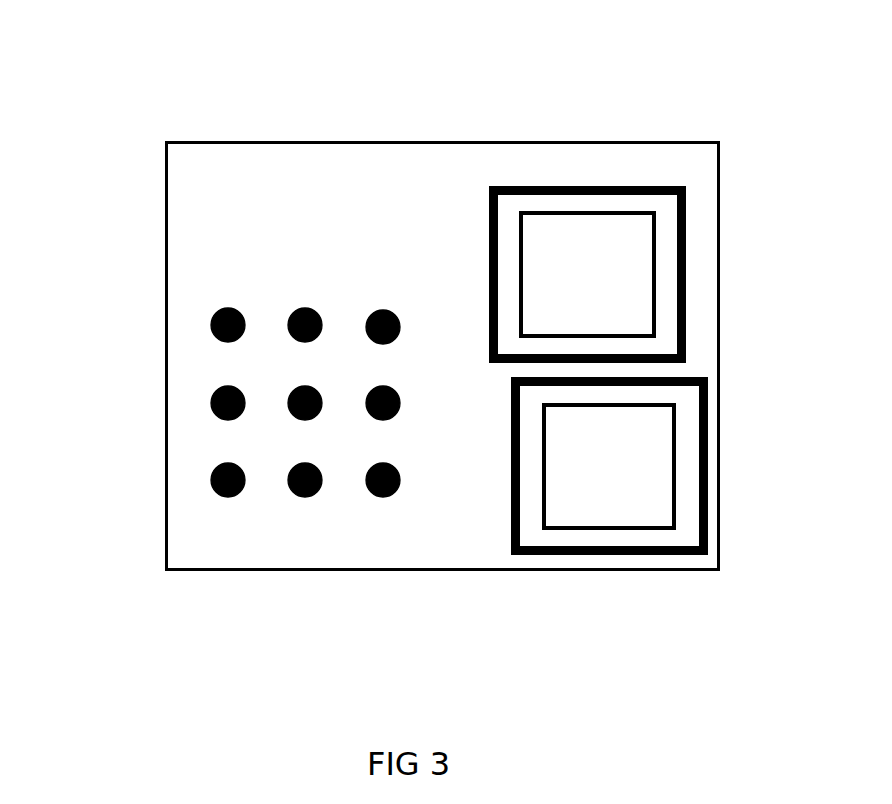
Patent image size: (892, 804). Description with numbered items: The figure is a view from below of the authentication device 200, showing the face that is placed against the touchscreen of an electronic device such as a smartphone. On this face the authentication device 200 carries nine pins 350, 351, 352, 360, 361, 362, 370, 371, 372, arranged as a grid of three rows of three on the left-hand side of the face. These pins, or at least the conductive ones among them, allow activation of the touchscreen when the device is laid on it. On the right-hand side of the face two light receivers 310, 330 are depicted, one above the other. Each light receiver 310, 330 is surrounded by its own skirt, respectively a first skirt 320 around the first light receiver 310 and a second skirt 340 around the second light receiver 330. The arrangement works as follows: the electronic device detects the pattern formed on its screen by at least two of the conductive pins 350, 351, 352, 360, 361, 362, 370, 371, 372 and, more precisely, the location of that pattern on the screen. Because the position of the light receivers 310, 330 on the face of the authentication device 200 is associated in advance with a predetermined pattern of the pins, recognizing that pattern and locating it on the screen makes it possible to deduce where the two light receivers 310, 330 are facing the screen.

The authentication device 200 is at (474, 339).
The light receiver 310 is at (543, 204).
The skirt 320 is at (588, 186).
The light receiver 330 is at (674, 466).
The skirt 340 is at (708, 383).
The pin 350 is at (211, 480).
The pin 351 is at (211, 403).
The pin 352 is at (173, 325).
The pin 360 is at (176, 469).
The pin 361 is at (176, 390).
The pin 362 is at (176, 314).
The pin 370 is at (385, 573).
The pin 371 is at (410, 508).
The pin 372 is at (430, 486).